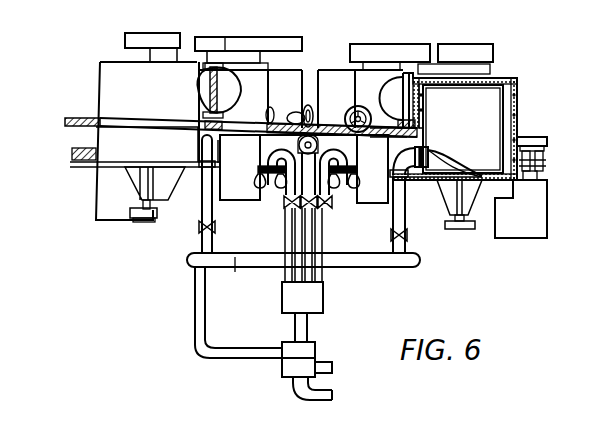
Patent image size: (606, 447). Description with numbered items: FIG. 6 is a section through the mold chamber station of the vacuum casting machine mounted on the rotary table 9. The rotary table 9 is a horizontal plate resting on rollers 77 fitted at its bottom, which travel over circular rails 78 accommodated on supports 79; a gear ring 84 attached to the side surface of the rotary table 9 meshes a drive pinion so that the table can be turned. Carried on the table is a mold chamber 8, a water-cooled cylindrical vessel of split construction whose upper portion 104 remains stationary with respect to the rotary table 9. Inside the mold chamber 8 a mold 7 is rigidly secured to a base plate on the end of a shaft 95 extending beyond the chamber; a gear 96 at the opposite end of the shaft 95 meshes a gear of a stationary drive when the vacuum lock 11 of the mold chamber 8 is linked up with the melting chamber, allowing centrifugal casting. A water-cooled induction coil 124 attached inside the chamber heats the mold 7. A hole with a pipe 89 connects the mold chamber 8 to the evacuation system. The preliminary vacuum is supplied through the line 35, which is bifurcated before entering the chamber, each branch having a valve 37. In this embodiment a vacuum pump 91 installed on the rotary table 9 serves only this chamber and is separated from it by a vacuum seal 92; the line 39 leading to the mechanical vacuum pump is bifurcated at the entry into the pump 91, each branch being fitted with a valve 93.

The mold 7 is at (492, 88).
The mold chamber 8 is at (530, 101).
The rotary table 9 is at (83, 112).
The vacuum lock 11 is at (195, 42).
The line 35 is at (202, 199).
The valve 37 is at (216, 228).
The line 39 is at (325, 243).
The rollers 77 is at (528, 162).
The circular rails 78 is at (529, 193).
The supports 79 is at (97, 202).
The gear ring 84 is at (547, 142).
The pipe 89 is at (199, 84).
The vacuum pump 91 is at (350, 205).
The vacuum seal 92 is at (346, 68).
The valve 93 is at (316, 205).
The shaft 95 is at (452, 220).
The gear 96 is at (455, 228).
The upper portion 104 is at (519, 120).
The induction coil 124 is at (512, 92).